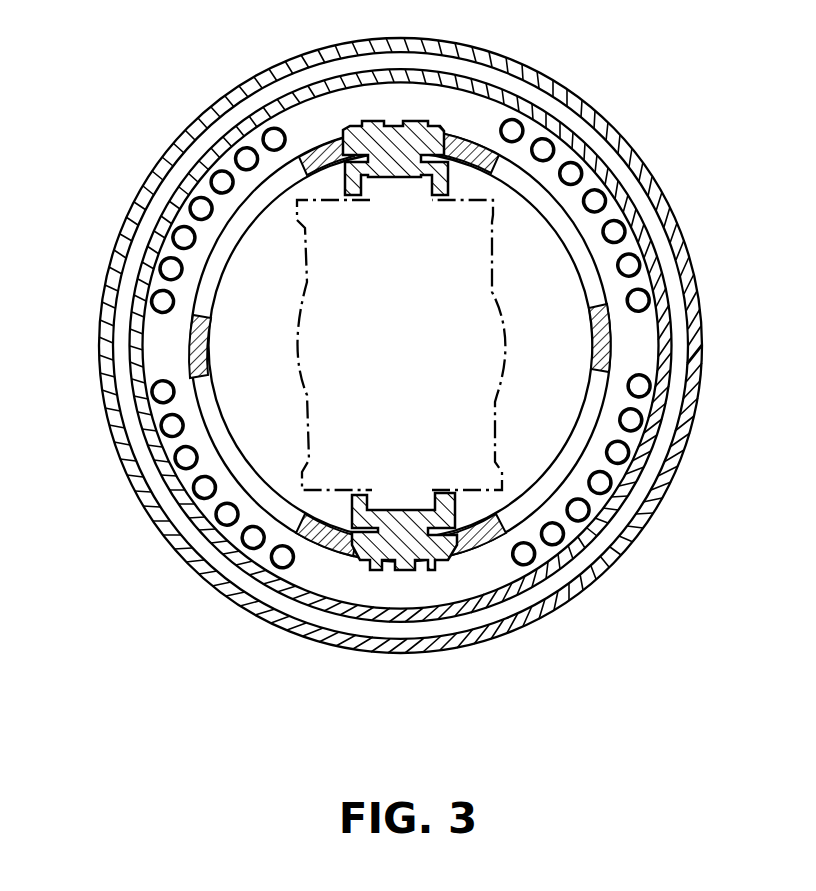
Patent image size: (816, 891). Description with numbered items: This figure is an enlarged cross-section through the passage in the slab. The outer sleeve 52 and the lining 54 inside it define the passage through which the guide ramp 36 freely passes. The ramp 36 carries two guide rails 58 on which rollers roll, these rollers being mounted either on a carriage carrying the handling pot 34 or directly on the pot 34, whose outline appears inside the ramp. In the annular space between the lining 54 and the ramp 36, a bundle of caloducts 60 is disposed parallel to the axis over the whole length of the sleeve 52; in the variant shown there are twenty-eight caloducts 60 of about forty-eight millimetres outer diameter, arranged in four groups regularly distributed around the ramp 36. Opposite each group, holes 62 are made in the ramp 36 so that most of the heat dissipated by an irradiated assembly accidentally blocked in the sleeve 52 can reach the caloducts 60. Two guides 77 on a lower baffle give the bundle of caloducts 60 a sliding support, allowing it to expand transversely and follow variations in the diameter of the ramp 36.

The handling pot 34 is at (512, 368).
The guide ramp 36 is at (612, 336).
The sleeve 52 is at (220, 101).
The lining 54 is at (499, 92).
The guide rails 58 is at (391, 180).
The caloducts 60 is at (160, 300).
The holes 62 is at (214, 407).
The guides 77 is at (378, 122).